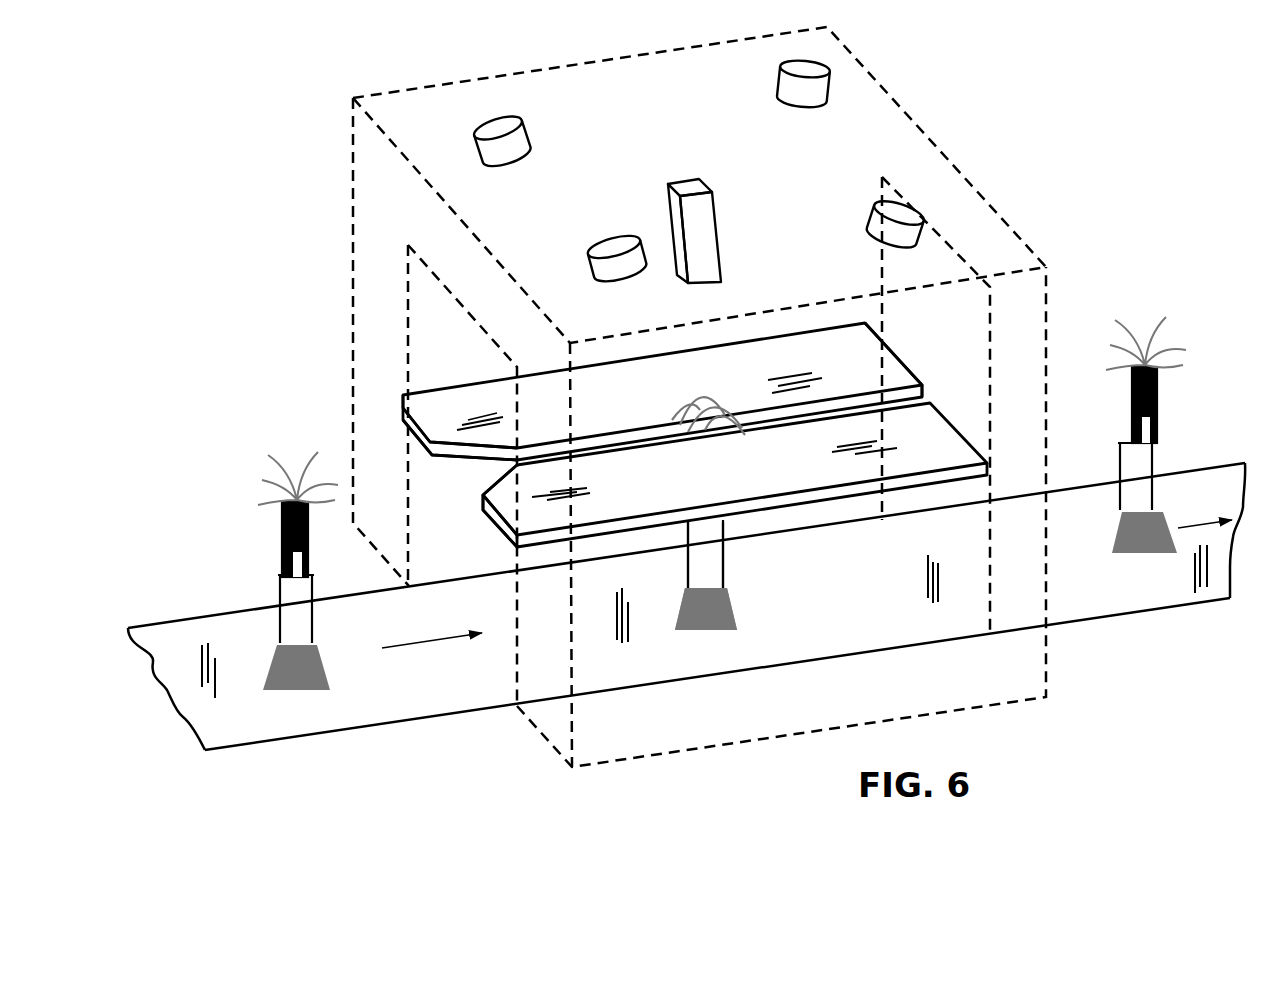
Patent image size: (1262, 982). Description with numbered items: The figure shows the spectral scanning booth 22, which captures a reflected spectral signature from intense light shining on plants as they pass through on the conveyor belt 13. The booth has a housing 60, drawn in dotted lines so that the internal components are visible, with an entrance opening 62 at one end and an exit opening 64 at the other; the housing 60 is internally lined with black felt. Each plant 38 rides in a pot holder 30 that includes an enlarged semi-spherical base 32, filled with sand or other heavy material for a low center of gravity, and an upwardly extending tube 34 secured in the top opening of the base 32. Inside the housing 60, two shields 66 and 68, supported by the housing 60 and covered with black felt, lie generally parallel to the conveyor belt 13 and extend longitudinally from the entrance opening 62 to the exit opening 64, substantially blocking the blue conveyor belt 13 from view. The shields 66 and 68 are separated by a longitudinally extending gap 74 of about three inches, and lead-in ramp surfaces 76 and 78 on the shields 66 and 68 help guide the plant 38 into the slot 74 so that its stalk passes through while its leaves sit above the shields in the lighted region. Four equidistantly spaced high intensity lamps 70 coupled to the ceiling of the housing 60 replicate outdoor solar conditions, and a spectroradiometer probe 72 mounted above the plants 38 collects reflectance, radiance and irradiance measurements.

The conveyor belt 13 is at (463, 680).
The spectral scanning booth 22 is at (1085, 240).
The pot holder 30 is at (312, 695).
The base 32 is at (717, 622).
The tube 34 is at (715, 567).
The plant 38 is at (720, 403).
The housing 60 is at (950, 163).
The entrance opening 62 is at (437, 343).
The exit opening 64 is at (963, 303).
The shield 66 is at (607, 420).
The shield 68 is at (803, 462).
The high intensity lamp 70 is at (807, 88).
The spectroradiometer probe 72 is at (698, 227).
The gap 74 is at (925, 398).
The lead-in ramp surface 76 is at (473, 453).
The lead-in ramp surface 78 is at (497, 473).